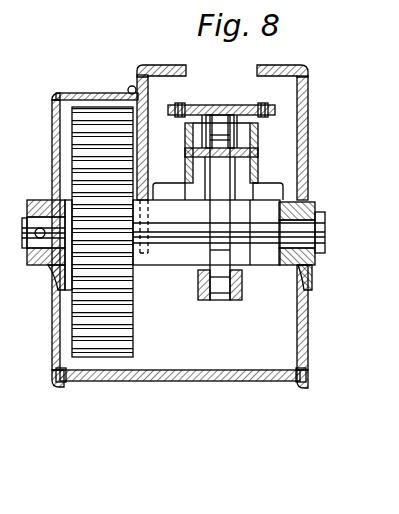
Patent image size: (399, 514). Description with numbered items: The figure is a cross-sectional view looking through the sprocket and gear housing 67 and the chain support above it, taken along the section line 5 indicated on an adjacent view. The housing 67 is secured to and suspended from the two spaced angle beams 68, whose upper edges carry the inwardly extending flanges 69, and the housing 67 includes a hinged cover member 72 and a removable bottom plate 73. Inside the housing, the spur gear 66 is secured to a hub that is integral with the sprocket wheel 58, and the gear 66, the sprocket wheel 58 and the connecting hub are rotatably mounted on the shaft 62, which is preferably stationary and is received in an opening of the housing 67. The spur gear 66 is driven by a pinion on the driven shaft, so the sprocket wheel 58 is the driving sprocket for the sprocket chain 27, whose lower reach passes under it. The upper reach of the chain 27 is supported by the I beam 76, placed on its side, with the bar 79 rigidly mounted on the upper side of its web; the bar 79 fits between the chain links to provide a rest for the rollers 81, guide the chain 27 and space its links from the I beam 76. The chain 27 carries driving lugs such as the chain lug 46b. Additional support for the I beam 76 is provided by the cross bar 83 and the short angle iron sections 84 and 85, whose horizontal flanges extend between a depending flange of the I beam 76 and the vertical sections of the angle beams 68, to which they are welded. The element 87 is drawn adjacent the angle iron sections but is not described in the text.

The section line 5- 5 is at (178, 60).
The sprocket chain 27 is at (242, 291).
The chain lug 46b is at (222, 112).
The sprocket wheel 58 is at (214, 250).
The shaft 62 is at (32, 247).
The spur gear 66 is at (133, 336).
The sprocket and gear housing 67 is at (48, 173).
The angle beam 68 is at (148, 108).
The flange 69 is at (166, 66).
The hinged cover member 72 is at (74, 93).
The removable bottom plate 73 is at (218, 382).
The I beam 76 is at (258, 166).
The bar 79 is at (188, 148).
The roller 81 is at (222, 126).
The cross bar 83 is at (253, 193).
The angle iron section 84 is at (309, 182).
The angle iron section 85 is at (165, 183).
The bracket 87 is at (268, 190).